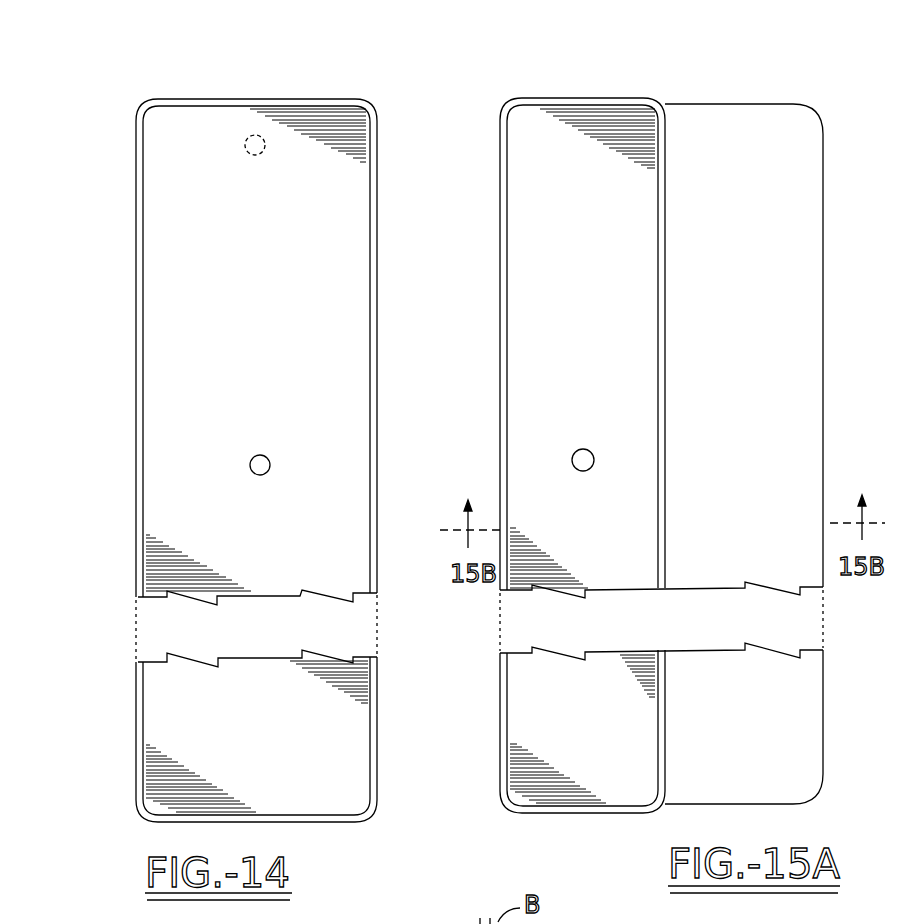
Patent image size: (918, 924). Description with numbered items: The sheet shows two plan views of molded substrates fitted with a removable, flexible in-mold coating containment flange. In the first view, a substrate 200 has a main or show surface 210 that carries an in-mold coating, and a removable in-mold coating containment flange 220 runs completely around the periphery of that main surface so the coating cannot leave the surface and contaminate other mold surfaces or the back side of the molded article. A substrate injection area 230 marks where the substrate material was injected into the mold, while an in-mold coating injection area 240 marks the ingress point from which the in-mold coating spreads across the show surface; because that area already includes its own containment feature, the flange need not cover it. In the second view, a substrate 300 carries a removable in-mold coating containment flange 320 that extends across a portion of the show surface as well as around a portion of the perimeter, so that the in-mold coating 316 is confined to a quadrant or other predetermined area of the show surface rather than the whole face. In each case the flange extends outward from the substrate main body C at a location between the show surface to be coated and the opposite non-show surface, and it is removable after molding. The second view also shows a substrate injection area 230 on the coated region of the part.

In FIG. 14, the substrate 200 is at (248, 439).
In FIG. 14, the substrate main surface 210 is at (163, 437).
In FIG. 14, the removable in-mold coating containment flange 220 is at (137, 237).
In FIG. 14, the substrate injection area 230 is at (268, 472).
In FIG. 15A, the substrate injection area 230 is at (575, 456).
In FIG. 14, the in-mold coating injection area 240 is at (256, 136).
In FIG. 15A, the substrate 300 is at (643, 414).
In FIG. 15A, the in-mold coating 316 is at (622, 435).
In FIG. 15A, the removable in-mold coating containment flange 320 is at (503, 222).
In FIG. 15A, the substrate main body C is at (780, 258).